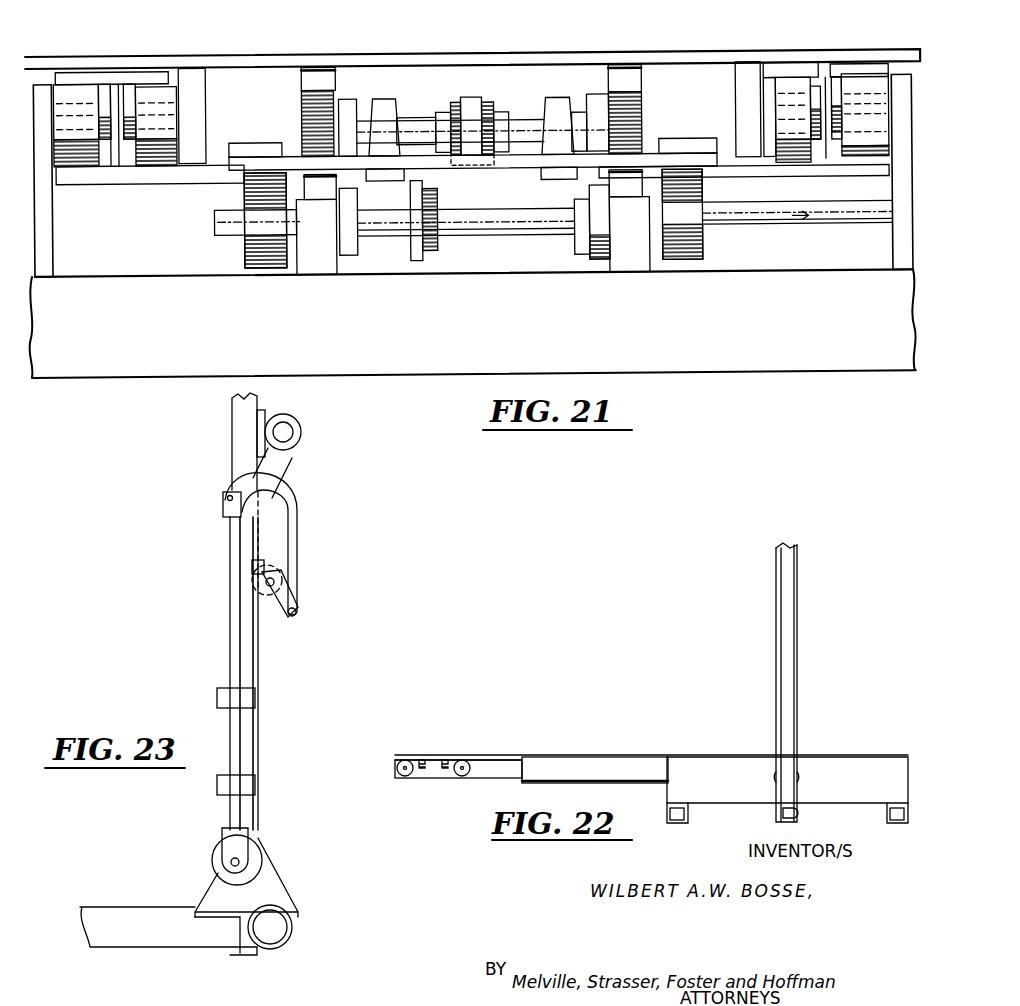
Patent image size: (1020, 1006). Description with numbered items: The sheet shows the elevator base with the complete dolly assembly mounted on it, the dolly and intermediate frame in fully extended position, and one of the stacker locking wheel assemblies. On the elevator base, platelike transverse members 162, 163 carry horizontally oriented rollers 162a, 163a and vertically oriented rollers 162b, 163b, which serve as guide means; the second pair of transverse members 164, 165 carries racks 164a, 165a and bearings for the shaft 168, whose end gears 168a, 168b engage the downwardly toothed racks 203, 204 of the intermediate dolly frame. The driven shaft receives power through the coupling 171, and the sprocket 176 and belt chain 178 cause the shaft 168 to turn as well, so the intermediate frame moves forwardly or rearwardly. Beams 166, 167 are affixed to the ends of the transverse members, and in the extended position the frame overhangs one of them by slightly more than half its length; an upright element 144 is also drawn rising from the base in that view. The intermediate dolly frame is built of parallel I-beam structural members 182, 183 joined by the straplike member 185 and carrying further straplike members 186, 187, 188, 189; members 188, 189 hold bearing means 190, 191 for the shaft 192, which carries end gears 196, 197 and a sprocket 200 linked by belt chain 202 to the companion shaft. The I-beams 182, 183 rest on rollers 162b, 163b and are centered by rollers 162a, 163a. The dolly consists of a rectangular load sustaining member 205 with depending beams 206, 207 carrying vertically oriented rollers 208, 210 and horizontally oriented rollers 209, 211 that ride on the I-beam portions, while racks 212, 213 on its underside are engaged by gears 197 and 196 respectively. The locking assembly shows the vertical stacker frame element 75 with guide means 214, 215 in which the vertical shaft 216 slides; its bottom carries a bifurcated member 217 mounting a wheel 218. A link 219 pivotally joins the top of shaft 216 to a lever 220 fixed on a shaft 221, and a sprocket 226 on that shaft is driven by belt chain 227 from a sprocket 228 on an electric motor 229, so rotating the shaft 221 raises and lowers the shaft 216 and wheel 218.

In FIG. 21, the transverse member 162 is at (45, 256).
In FIG. 21, the horizontally oriented rollers 162a is at (106, 114).
In FIG. 21, the vertically oriented rollers 162b is at (78, 98).
In FIG. 21, the transverse member 163 is at (897, 256).
In FIG. 22, the transverse member 163 is at (837, 758).
In FIG. 21, the horizontally oriented rollers 163a is at (842, 107).
In FIG. 21, the vertically oriented rollers 163b is at (870, 90).
In FIG. 21, the transverse member 164 is at (325, 273).
In FIG. 21, the rack 164a is at (315, 197).
In FIG. 21, the transverse member 165 is at (632, 273).
In FIG. 21, the rack 165a is at (598, 257).
In FIG. 21, the shaft 168 is at (537, 230).
In FIG. 21, the gear 168a is at (254, 260).
In FIG. 21, the gear 168b is at (703, 258).
In FIG. 21, the coupling 171 is at (807, 234).
In FIG. 21, the sprocket 176 is at (440, 254).
In FIG. 21, the belt chain 178 is at (412, 240).
In FIG. 21, the structural member 182 is at (87, 185).
In FIG. 21, the straplike structural member 185 is at (512, 172).
In FIG. 21, the straplike structural member 186 is at (685, 144).
In FIG. 21, the straplike structural member 187 is at (243, 144).
In FIG. 21, the straplike structural member 188 is at (567, 188).
In FIG. 21, the straplike structural member 189 is at (373, 184).
In FIG. 21, the bearing means 190 is at (560, 103).
In FIG. 21, the bearing means 191 is at (390, 103).
In FIG. 21, the shaft 192 is at (412, 121).
In FIG. 21, the gear 196 is at (645, 110).
In FIG. 21, the gear 197 is at (303, 118).
In FIG. 21, the sprocket 200 is at (495, 107).
In FIG. 21, the belt chain 202 is at (473, 101).
In FIG. 21, the rack 203 is at (254, 176).
In FIG. 21, the rack 204 is at (702, 174).
In FIG. 21, the beam 206 is at (205, 82).
In FIG. 21, the beam 207 is at (740, 84).
In FIG. 22, the beam 207 is at (433, 760).
In FIG. 21, the vertically oriented rollers 208 is at (165, 170).
In FIG. 22, the vertically oriented rollers 208 is at (405, 777).
In FIG. 21, the horizontally oriented rollers 209 is at (130, 144).
In FIG. 21, the vertically oriented roller 210 is at (775, 69).
In FIG. 21, the horizontally oriented roller 211 is at (820, 153).
In FIG. 21, the rack 212 is at (313, 80).
In FIG. 21, the rack 213 is at (643, 78).
In FIG. 23, the vertical stacker frame element 75 is at (253, 738).
In FIG. 23, the guide means 214 is at (217, 697).
In FIG. 23, the guide means 215 is at (217, 787).
In FIG. 23, the vertical shaft 216 is at (233, 605).
In FIG. 23, the bifurcated member 217 is at (240, 840).
In FIG. 23, the wheel 218 is at (215, 858).
In FIG. 23, the link 219 is at (300, 543).
In FIG. 23, the lever 220 is at (284, 610).
In FIG. 23, the shaft 221 is at (290, 582).
In FIG. 23, the sprocket 226 is at (268, 565).
In FIG. 23, the belt chain 227 is at (295, 475).
In FIG. 23, the sprocket 228 is at (293, 437).
In FIG. 23, the electric motor 229 is at (293, 417).
In FIG. 22, the upright plate 144 is at (793, 642).
In FIG. 22, the structural member 183 is at (615, 767).
In FIG. 22, the load sustaining member 205 is at (498, 757).
In FIG. 22, the beam 166 is at (890, 824).
In FIG. 22, the beam 167 is at (678, 824).